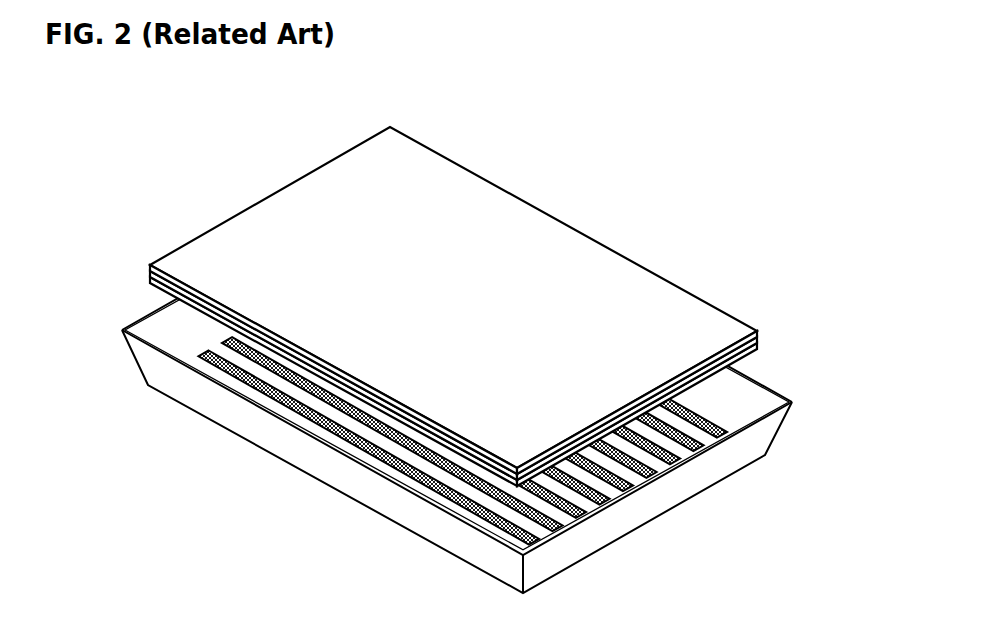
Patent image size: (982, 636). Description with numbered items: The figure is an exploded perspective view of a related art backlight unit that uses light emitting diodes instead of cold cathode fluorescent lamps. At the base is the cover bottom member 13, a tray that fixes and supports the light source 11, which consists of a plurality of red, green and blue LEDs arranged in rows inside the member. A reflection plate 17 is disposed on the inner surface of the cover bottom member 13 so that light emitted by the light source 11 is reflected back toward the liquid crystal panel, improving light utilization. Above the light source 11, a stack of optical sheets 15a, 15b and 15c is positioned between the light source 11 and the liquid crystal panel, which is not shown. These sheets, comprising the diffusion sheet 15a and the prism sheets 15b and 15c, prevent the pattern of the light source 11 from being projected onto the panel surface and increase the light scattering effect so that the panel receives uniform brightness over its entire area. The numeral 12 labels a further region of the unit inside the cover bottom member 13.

The light source 11 is at (489, 385).
The reflective sheet 12 is at (692, 411).
The cover bottom member 13 is at (752, 437).
The diffusion sheet 15a is at (160, 287).
The prism sheet 15b is at (150, 268).
The optical sheet 15c is at (733, 336).
The reflection plate 17 is at (622, 480).